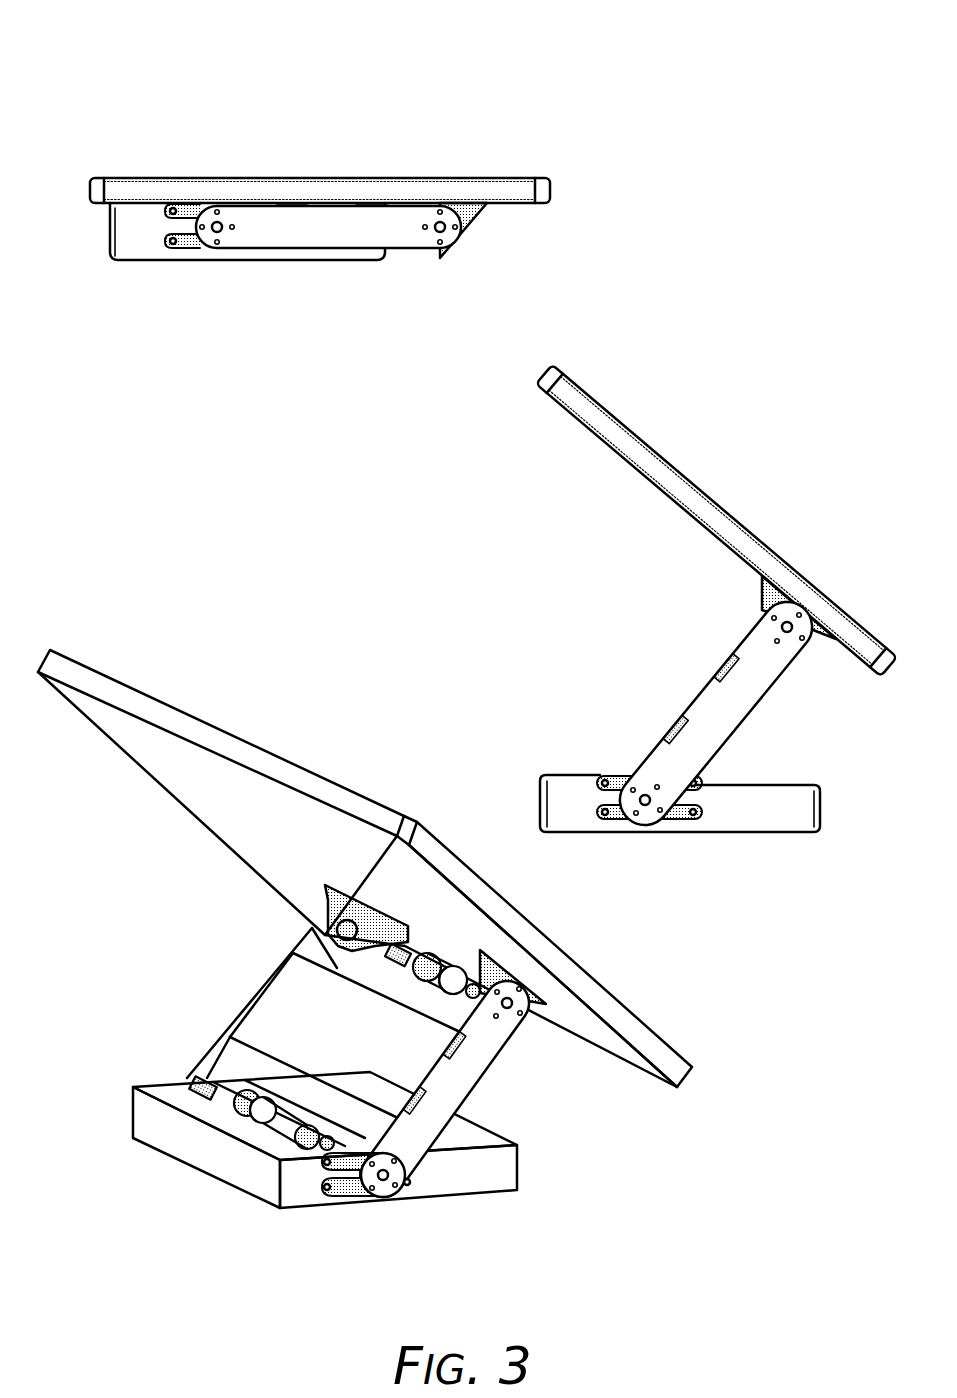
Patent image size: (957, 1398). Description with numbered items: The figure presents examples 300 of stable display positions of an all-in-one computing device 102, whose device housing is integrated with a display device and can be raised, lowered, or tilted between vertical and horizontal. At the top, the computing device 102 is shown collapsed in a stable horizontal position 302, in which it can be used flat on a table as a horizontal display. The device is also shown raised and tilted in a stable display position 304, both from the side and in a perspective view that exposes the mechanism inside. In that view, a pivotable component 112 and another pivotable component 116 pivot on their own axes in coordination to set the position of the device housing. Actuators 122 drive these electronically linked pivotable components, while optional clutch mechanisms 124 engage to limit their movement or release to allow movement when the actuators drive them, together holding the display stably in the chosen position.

The computing device 102 is at (320, 1073).
The pivotable component 112 is at (322, 1037).
The pivotable component 116 is at (218, 1179).
The actuators 122 is at (287, 1081).
The clutch mechanisms 124 is at (378, 1003).
The examples of stable display positions 300 is at (763, 82).
The stable horizontal position 302 is at (387, 148).
The stable display position 304 is at (430, 576).